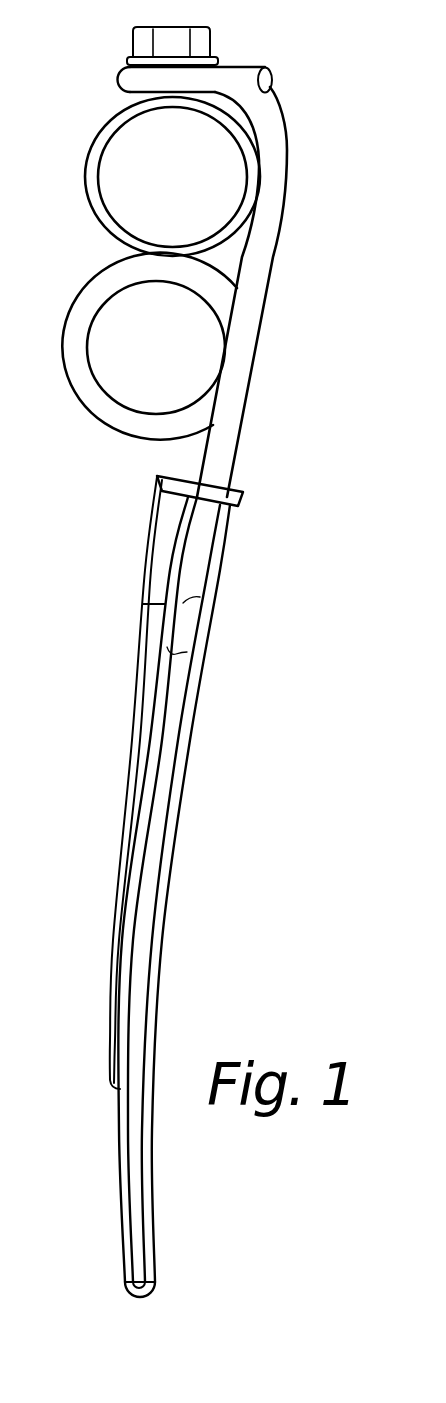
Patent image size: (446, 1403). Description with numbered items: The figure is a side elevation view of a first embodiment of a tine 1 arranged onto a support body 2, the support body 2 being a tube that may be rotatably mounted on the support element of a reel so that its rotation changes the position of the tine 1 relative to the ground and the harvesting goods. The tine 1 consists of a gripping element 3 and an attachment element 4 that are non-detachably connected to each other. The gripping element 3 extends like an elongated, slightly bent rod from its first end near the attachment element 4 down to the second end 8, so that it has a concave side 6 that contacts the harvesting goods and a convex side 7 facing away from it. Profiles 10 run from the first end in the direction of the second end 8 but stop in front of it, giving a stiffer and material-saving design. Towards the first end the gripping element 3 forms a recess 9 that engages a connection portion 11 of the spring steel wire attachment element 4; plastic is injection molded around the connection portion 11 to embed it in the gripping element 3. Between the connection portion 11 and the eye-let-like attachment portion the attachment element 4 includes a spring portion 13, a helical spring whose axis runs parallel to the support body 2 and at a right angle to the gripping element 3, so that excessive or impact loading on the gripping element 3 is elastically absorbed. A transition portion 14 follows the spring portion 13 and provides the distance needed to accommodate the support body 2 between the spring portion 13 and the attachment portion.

The tine 1 is at (386, 467).
The support body 2 is at (102, 200).
The gripping element 3 is at (143, 902).
The attachment element 4 is at (200, 370).
The concave side 6 is at (177, 830).
The convex side 7 is at (122, 1112).
The second end 8 is at (140, 1298).
The recess 9 is at (212, 541).
The profiles 10 is at (148, 643).
The connection portion 11 is at (230, 588).
The spring portion 13 is at (108, 403).
The transition portion 14 is at (273, 208).